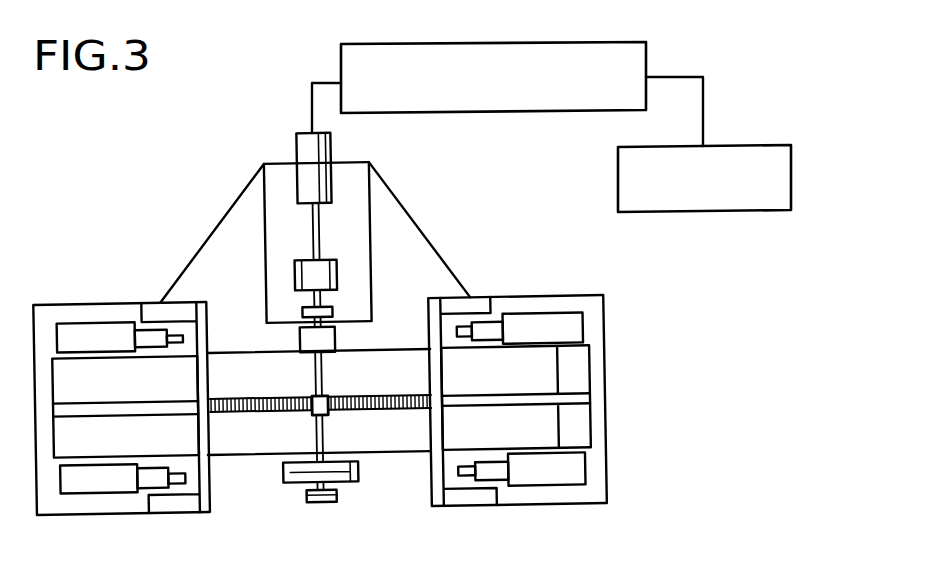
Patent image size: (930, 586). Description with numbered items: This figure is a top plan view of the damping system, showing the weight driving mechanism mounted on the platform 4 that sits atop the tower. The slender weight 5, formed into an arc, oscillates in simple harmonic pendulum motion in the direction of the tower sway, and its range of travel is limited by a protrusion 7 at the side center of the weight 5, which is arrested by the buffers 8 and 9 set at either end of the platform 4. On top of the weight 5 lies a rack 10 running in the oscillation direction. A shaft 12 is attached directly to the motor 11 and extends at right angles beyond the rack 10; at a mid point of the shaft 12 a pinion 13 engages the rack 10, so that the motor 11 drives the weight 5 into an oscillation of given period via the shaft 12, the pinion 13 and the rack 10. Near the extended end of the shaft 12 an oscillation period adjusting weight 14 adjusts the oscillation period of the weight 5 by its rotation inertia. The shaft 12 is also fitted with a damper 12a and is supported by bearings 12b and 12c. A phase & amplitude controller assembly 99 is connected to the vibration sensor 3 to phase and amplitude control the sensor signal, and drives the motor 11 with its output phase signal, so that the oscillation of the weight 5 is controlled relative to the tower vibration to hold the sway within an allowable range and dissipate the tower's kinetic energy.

The phase & amplitude controller assembly 99 is at (432, 44).
The vibration sensor 3 is at (728, 147).
The motor 11 is at (306, 151).
The shaft 12 is at (315, 238).
The damper 12a is at (339, 275).
The bearing 12b is at (335, 310).
The bearing 12c is at (328, 502).
The protrusion 7 is at (338, 338).
The weight 5 is at (256, 364).
The buffer 8 is at (179, 334).
The platform 4 is at (580, 300).
The buffer 9 is at (459, 332).
The rack 10 is at (250, 411).
The pinion 13 is at (332, 407).
The oscillation period adjusting weight 14 is at (299, 480).